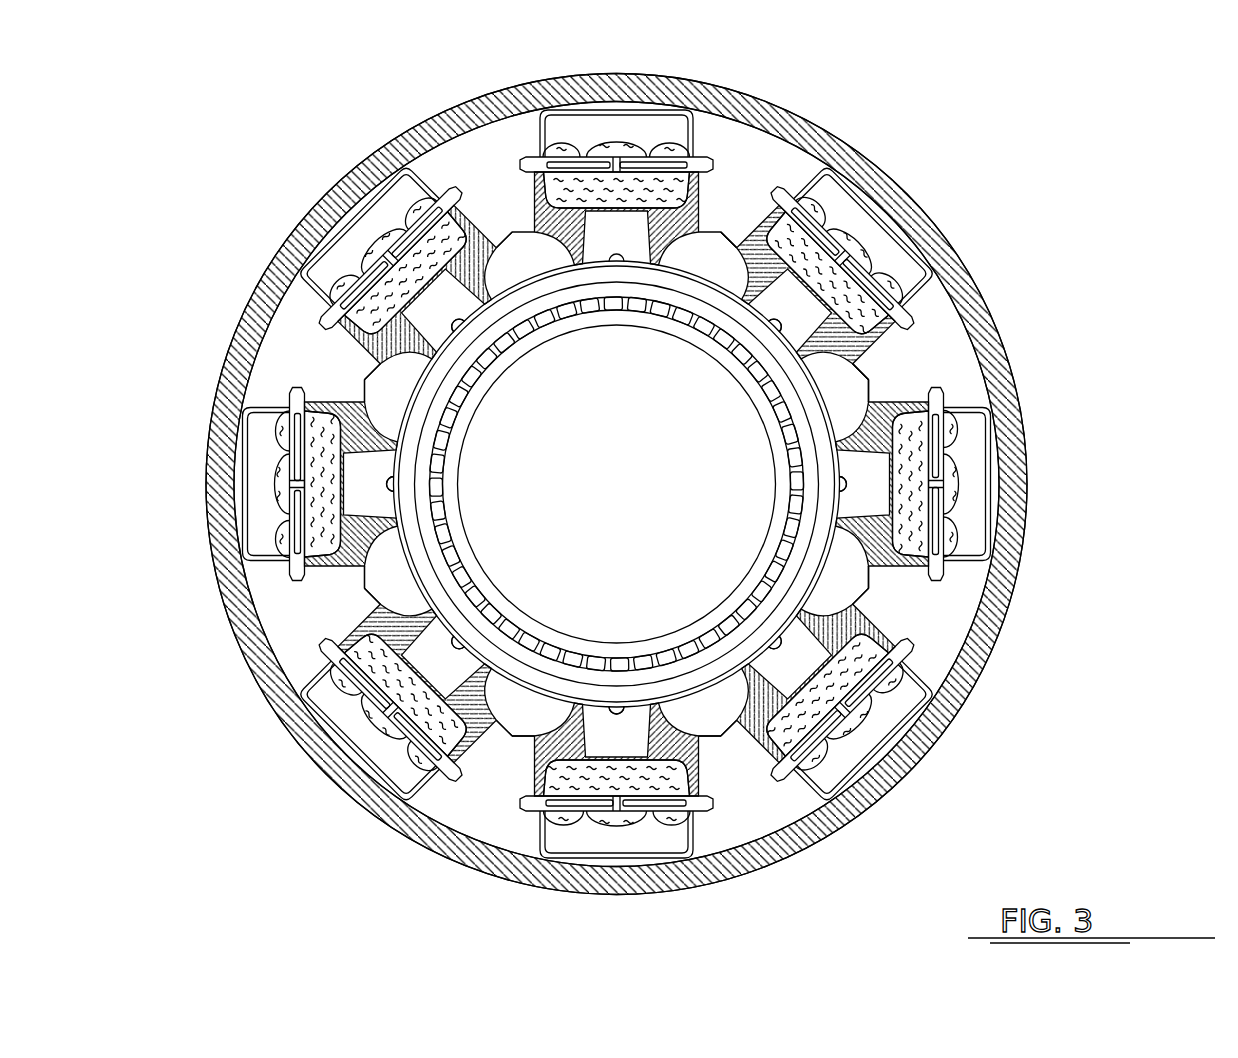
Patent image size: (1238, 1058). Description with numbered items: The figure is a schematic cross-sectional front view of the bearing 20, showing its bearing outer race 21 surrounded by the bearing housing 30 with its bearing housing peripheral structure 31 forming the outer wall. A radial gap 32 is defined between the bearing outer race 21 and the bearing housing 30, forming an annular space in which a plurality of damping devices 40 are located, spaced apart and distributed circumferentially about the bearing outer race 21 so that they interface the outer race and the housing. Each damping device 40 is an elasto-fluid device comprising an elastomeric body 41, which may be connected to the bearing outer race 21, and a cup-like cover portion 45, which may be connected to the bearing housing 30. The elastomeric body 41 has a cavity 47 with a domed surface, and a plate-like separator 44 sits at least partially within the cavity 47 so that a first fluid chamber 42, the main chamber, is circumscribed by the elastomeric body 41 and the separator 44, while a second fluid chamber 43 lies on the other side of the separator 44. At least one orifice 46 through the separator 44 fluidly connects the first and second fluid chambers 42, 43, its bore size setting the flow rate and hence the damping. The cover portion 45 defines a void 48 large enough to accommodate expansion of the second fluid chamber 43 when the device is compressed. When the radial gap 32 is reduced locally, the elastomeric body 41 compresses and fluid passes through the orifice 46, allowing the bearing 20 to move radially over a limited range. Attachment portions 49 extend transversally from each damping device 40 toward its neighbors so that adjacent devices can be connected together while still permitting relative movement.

The bearing 20 is at (740, 387).
The bearing outer race 21 is at (808, 404).
The bearing housing 30 is at (926, 150).
The bearing housing peripheral structure 31 is at (958, 274).
The radial gap 32 is at (395, 579).
The damping device 40 is at (596, 472).
The elastomeric body 41 is at (526, 114).
The first fluid chamber 42 is at (601, 105).
The second fluid chamber 43 is at (617, 98).
The separator 44 is at (620, 118).
The cover portion 45 is at (619, 93).
The orifice 46 is at (623, 95).
The cavity 47 is at (658, 149).
The void 48 is at (645, 111).
The attachment portion 49 is at (804, 160).